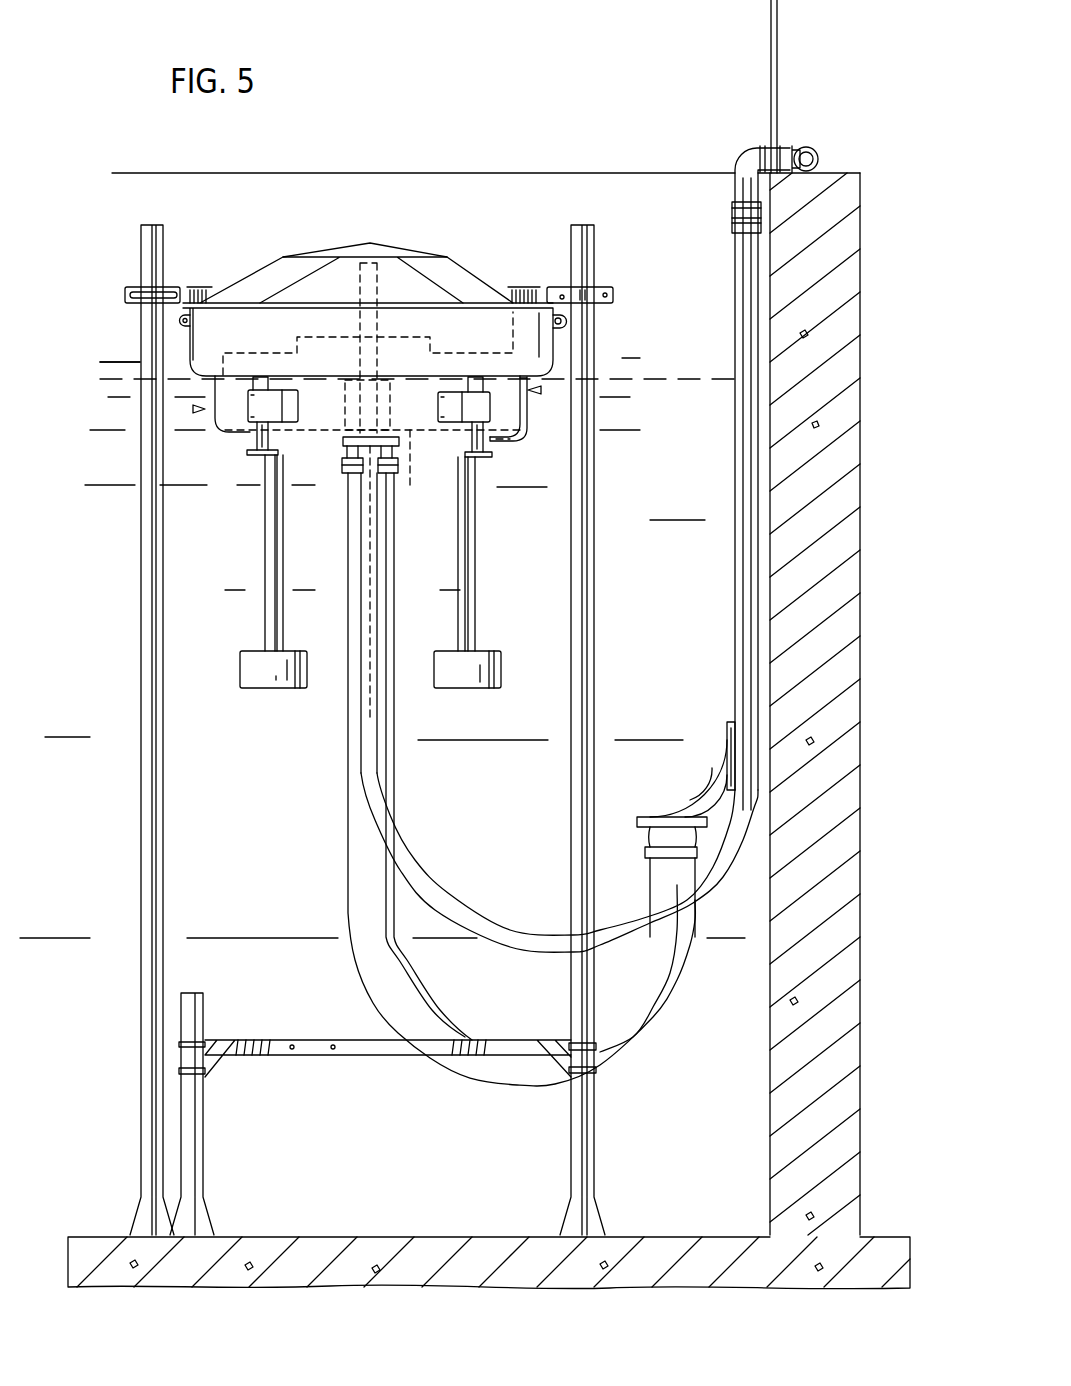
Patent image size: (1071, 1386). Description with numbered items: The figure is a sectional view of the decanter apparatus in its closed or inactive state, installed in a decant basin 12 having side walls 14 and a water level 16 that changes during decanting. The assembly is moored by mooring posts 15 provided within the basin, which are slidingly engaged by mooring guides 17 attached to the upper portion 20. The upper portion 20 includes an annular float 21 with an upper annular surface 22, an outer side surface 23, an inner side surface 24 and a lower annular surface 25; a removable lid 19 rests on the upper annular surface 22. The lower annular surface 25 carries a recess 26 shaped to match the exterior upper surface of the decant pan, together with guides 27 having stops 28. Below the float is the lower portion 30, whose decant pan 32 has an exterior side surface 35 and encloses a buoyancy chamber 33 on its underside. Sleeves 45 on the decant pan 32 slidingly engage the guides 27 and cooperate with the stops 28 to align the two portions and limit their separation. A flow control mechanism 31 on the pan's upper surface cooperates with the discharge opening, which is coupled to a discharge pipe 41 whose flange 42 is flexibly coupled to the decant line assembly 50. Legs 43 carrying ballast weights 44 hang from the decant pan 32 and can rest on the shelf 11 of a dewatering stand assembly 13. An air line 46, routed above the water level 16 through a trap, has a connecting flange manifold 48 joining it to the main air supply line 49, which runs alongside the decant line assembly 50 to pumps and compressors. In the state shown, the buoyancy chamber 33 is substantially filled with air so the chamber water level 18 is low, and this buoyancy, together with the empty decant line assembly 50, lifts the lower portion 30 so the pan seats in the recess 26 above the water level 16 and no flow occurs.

The shelf 11 is at (313, 1047).
The decant basin 12 is at (84, 1042).
The dewatering stand assembly 13 is at (182, 1000).
The side walls 14 is at (795, 1000).
The mooring posts 15 is at (150, 225).
The water level 16 is at (117, 358).
The mooring guides 17 is at (133, 297).
The chamber water level 18 is at (538, 415).
The lid 19 is at (280, 330).
The upper portion 20 is at (172, 343).
The float 21 is at (297, 305).
The upper annular surface 22 is at (175, 296).
The outer side surface 23 is at (550, 330).
The inner side surface 24 is at (445, 335).
The lower annular surface 25 is at (200, 378).
The recess 26 is at (555, 352).
The guides 27 is at (247, 450).
The stops 28 is at (262, 460).
The lower portion 30 is at (193, 409).
The flow control mechanism 31 is at (430, 312).
The decant pan 32 is at (541, 390).
The buoyancy chamber 33 is at (438, 432).
The exterior side surface 35 is at (215, 405).
The discharge pipe 41 is at (424, 408).
The flange 42 is at (340, 437).
The legs 43 is at (267, 557).
The ballast weights 44 is at (250, 672).
The sleeves 45 is at (486, 402).
The air line 46 is at (387, 258).
The connecting flange manifold 48 is at (352, 462).
The main air supply line 49 is at (745, 570).
The decant line assembly 50 is at (352, 862).